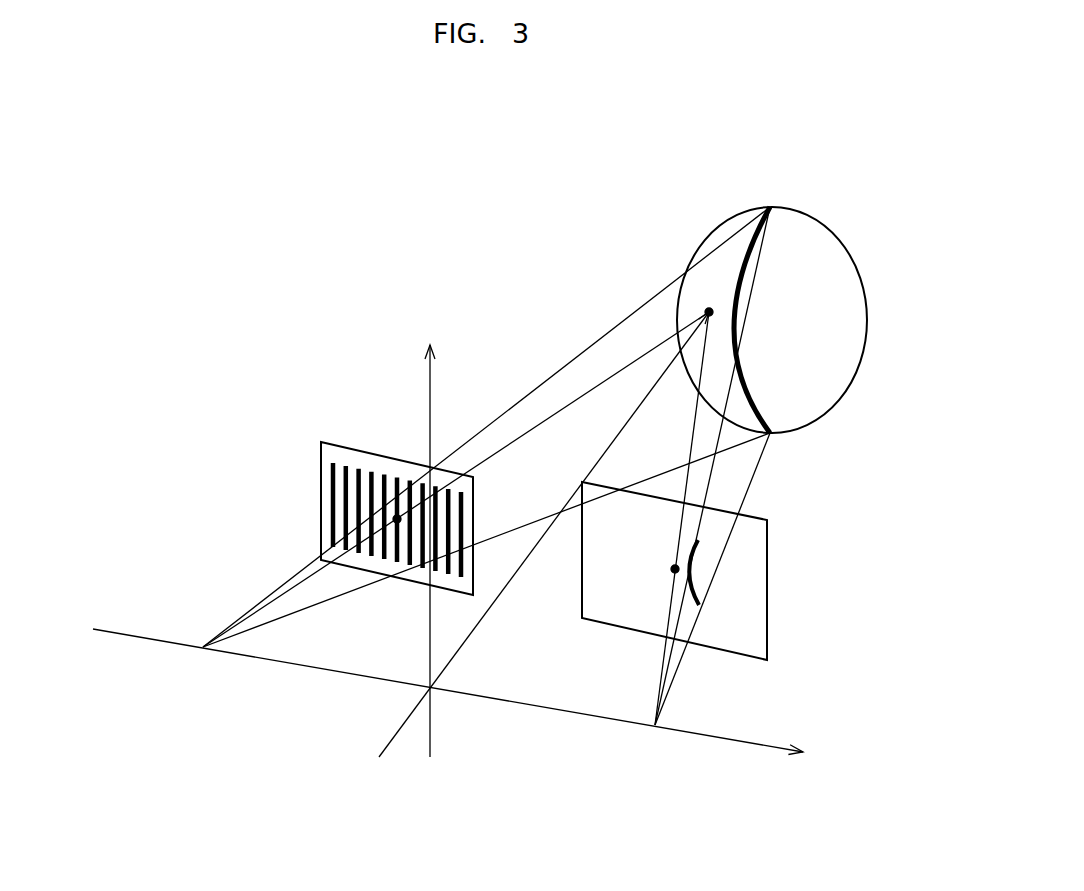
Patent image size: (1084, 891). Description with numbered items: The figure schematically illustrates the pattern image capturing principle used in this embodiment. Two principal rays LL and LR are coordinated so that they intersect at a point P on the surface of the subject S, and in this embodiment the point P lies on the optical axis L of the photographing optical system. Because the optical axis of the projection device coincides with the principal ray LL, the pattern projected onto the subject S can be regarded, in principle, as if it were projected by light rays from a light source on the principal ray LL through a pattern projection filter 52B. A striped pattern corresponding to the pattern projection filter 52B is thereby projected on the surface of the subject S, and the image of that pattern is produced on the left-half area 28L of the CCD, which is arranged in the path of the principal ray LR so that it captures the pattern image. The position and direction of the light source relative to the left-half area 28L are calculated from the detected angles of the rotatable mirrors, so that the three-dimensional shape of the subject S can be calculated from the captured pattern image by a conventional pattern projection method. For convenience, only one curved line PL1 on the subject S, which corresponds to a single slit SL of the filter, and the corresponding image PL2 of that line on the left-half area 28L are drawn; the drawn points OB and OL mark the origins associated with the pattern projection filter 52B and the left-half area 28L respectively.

The optical axis L is at (392, 738).
The slit SL is at (505, 412).
The principal ray LL is at (525, 435).
The principal ray LR is at (716, 433).
The subject S is at (795, 433).
The curved line PL1 is at (748, 400).
The point P is at (711, 306).
The pattern projection filter 52B is at (321, 497).
The right viewpoint origin OB is at (396, 519).
The left-half area 28L is at (767, 612).
The left viewpoint origin OL is at (672, 569).
The image PL2 is at (690, 586).